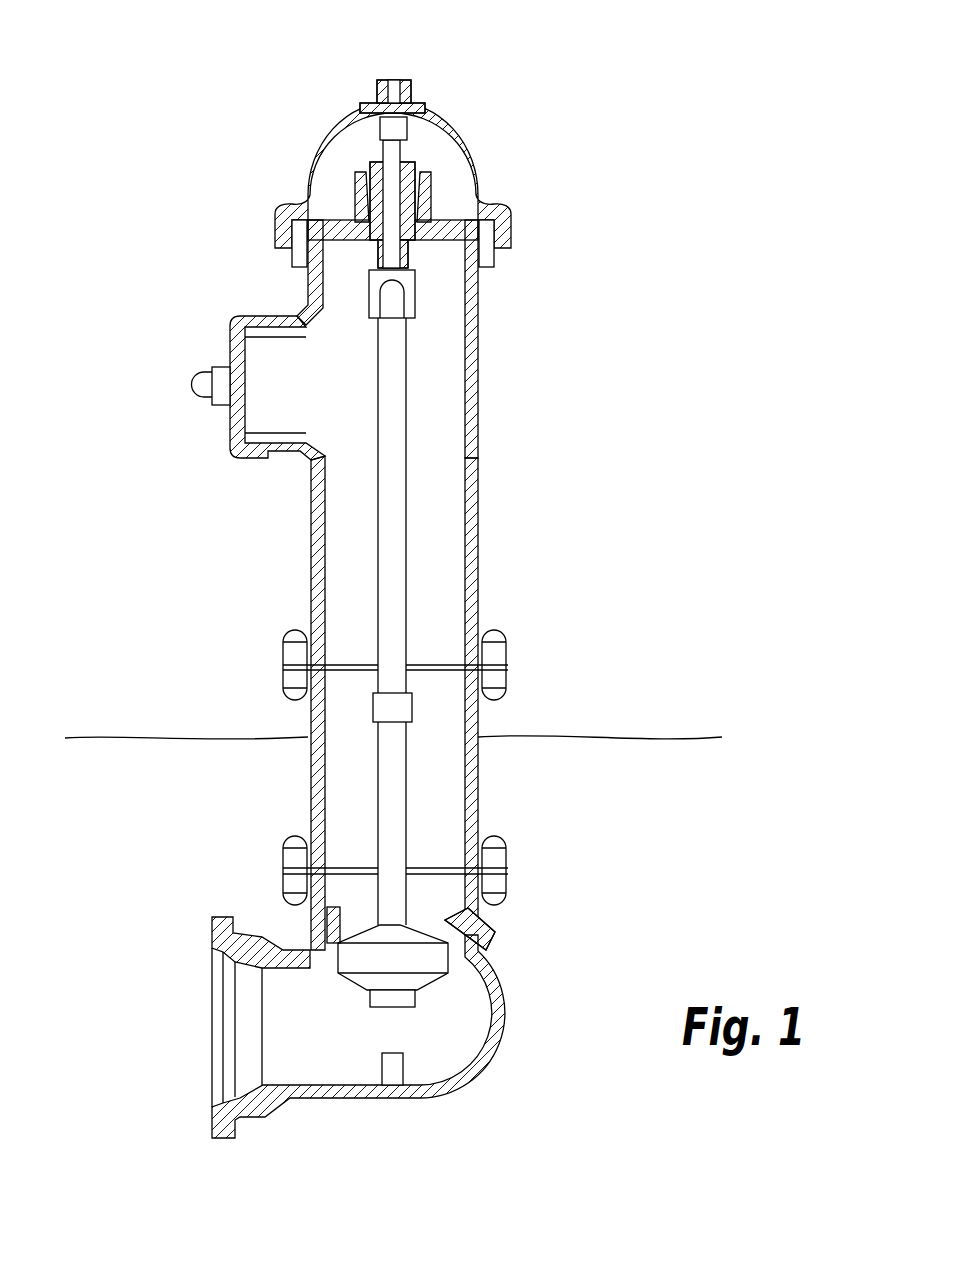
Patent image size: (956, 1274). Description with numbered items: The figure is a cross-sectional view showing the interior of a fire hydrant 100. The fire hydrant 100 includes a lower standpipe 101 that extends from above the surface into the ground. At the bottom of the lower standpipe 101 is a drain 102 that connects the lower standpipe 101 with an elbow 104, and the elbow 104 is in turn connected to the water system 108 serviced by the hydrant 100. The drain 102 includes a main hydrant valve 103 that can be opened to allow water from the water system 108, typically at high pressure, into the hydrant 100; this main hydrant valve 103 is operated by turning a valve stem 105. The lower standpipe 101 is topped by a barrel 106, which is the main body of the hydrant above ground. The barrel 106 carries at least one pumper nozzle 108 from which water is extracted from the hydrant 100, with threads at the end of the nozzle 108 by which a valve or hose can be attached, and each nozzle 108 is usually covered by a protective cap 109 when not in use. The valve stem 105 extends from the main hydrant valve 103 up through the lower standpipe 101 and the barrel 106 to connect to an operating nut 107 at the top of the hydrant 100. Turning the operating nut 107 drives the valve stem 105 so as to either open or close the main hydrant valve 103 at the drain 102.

The fire hydrant 100 is at (168, 165).
The lower standpipe 101 is at (470, 777).
The drain 102 is at (492, 926).
The main hydrant valve 103 is at (422, 962).
The elbow 104 is at (493, 1067).
The valve stem 105 is at (392, 522).
The barrel 106 is at (470, 335).
The operating nut 107 is at (397, 72).
The pumper nozzle 108 is at (230, 330).
The protective cap 109 is at (230, 417).